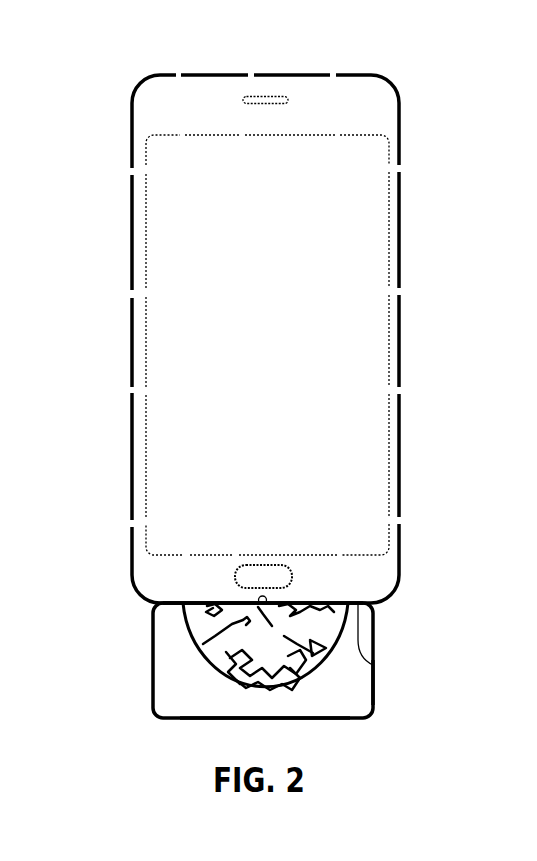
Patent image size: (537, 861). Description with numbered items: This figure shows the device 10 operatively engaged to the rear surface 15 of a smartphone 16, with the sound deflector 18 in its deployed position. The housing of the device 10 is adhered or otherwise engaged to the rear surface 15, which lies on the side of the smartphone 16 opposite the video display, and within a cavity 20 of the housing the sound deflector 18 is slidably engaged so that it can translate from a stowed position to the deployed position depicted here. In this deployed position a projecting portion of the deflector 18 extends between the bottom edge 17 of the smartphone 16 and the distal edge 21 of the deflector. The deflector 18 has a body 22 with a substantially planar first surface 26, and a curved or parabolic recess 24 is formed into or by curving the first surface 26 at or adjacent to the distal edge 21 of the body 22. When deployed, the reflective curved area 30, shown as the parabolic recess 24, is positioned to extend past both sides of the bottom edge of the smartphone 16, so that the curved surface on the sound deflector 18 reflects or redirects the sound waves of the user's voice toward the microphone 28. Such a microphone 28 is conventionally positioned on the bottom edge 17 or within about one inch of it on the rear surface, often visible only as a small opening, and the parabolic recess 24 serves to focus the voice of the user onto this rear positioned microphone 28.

The device 10 is at (7, 510).
The rear surface 15 is at (127, 462).
The smartphone 16 is at (130, 108).
The bottom edge 17 is at (153, 606).
The sound deflector 18 is at (157, 706).
The cavity 20 is at (373, 665).
The distal edge 21 is at (332, 722).
The body 22 is at (345, 702).
The parabolic recess 24 is at (187, 634).
The first surface 26 is at (217, 703).
The microphone 28 is at (257, 599).
The reflective curved area 30 is at (274, 648).